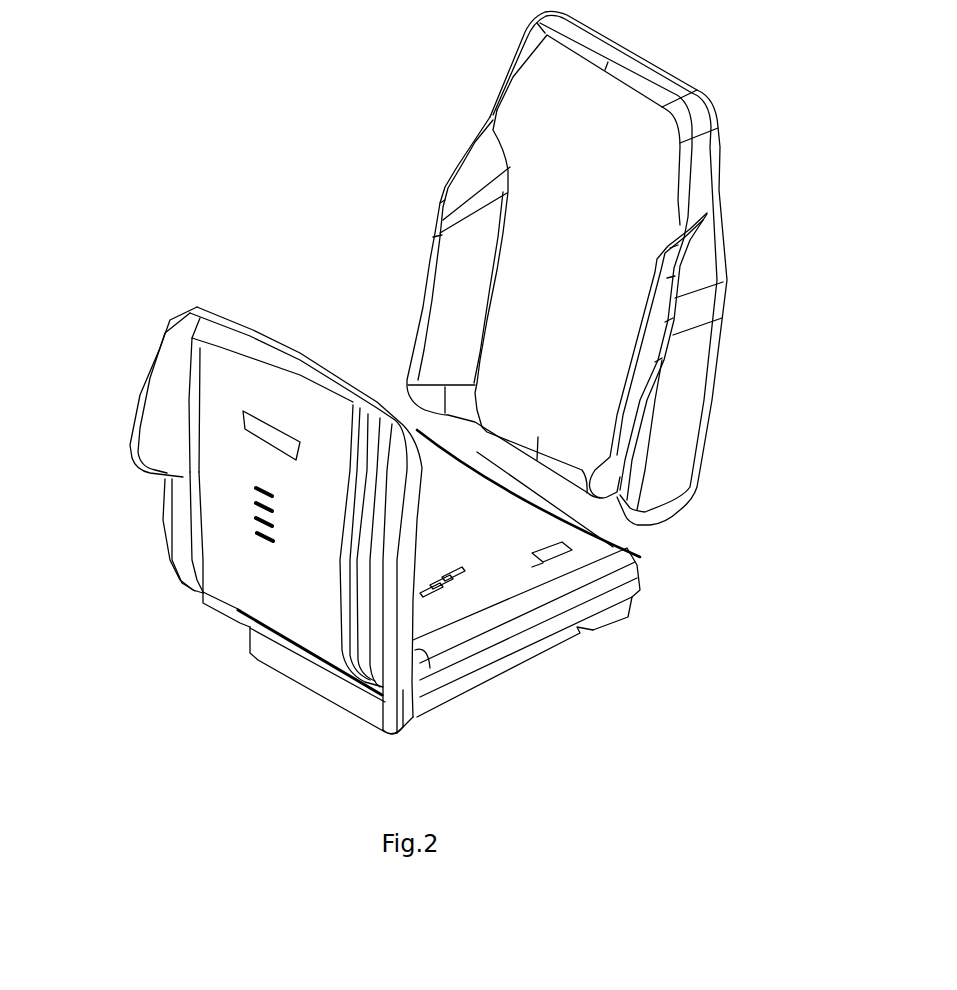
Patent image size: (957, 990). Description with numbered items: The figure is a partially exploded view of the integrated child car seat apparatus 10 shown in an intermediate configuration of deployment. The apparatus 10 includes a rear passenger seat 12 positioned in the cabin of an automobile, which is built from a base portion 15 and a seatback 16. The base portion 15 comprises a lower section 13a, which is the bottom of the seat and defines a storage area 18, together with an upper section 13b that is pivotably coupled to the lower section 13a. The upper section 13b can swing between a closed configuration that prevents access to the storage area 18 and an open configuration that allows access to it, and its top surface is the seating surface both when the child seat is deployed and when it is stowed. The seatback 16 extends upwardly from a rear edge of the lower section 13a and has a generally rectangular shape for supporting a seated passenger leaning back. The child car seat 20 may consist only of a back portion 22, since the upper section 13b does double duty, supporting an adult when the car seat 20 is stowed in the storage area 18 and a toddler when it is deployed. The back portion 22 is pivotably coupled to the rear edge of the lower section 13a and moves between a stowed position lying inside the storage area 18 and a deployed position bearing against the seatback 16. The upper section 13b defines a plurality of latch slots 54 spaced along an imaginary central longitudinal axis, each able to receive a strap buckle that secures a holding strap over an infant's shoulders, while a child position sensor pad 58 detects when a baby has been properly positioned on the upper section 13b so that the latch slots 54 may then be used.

The integrated child car seat apparatus 10 is at (279, 133).
The rear passenger seat 12 is at (775, 374).
The lower section 13a is at (598, 592).
The upper section 13b is at (168, 545).
The base portion 15 is at (129, 273).
The seatback 16 is at (645, 190).
The storage area 18 is at (656, 561).
The child car seat 20 is at (501, 583).
The back portion 22 is at (473, 593).
The latch slots 54 is at (212, 503).
The child position sensor pad 58 is at (257, 427).